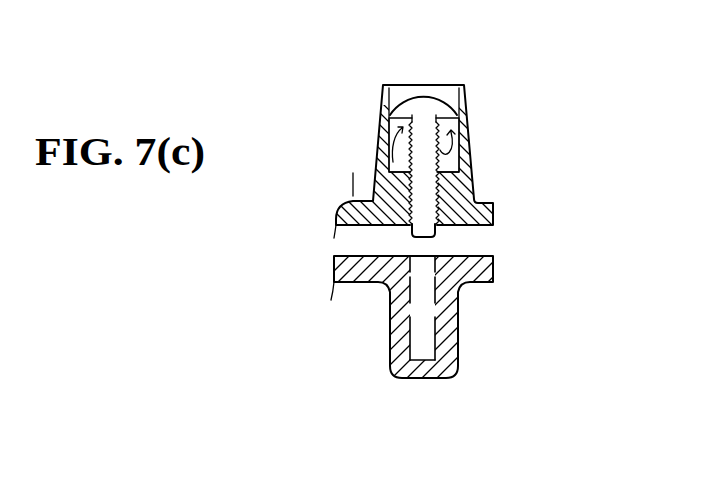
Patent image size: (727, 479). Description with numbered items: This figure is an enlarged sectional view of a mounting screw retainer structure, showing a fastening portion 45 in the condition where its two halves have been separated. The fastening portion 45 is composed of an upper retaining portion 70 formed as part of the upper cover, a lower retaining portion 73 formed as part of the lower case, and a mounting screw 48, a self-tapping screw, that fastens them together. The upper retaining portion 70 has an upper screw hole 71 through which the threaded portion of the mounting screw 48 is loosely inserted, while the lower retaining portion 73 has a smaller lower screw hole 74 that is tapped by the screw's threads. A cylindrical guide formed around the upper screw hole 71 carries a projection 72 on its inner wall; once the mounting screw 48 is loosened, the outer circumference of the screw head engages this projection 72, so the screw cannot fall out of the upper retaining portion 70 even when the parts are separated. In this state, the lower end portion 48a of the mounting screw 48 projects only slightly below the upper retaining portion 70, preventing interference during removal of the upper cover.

The fastening portion 45 is at (363, 103).
The mounting screw 48 is at (423, 108).
The lower end portion 48a is at (458, 244).
The upper retaining portion 70 is at (468, 104).
The upper screw hole 71 is at (443, 193).
The projection 72 is at (387, 158).
The lower retaining portion 73 is at (461, 301).
The lower screw hole 74 is at (443, 339).